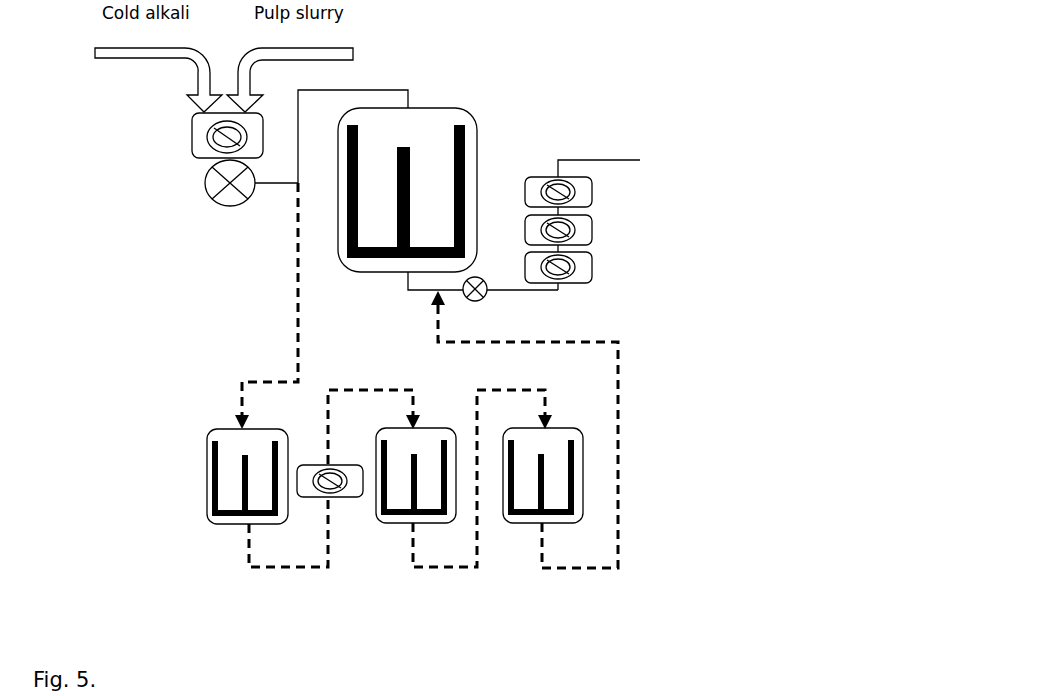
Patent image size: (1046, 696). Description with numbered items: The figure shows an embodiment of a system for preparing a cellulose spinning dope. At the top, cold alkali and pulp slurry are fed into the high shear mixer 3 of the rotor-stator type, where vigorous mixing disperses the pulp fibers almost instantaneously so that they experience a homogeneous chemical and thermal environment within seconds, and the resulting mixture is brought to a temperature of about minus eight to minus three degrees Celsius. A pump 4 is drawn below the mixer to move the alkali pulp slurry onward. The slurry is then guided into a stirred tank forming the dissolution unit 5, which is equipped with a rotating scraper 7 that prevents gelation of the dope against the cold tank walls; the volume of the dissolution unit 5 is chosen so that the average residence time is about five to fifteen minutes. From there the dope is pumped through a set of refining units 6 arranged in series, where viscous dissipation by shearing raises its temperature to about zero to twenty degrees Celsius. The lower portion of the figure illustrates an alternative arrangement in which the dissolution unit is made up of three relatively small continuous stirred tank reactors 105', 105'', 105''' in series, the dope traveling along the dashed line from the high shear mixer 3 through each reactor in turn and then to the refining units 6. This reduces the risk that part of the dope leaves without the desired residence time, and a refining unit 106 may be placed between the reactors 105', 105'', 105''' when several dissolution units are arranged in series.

The high shear mixer 3 is at (203, 144).
The pump 4 is at (218, 182).
The dissolution unit 5 is at (433, 158).
The refining units 6 is at (580, 232).
The rotating scraper 7 is at (460, 140).
The continuous stirred tank reactor 105' is at (192, 476).
The continuous stirred tank reactor 105'' is at (429, 528).
The continuous stirred tank reactor 105''' is at (616, 475).
The refining unit 106 is at (310, 490).